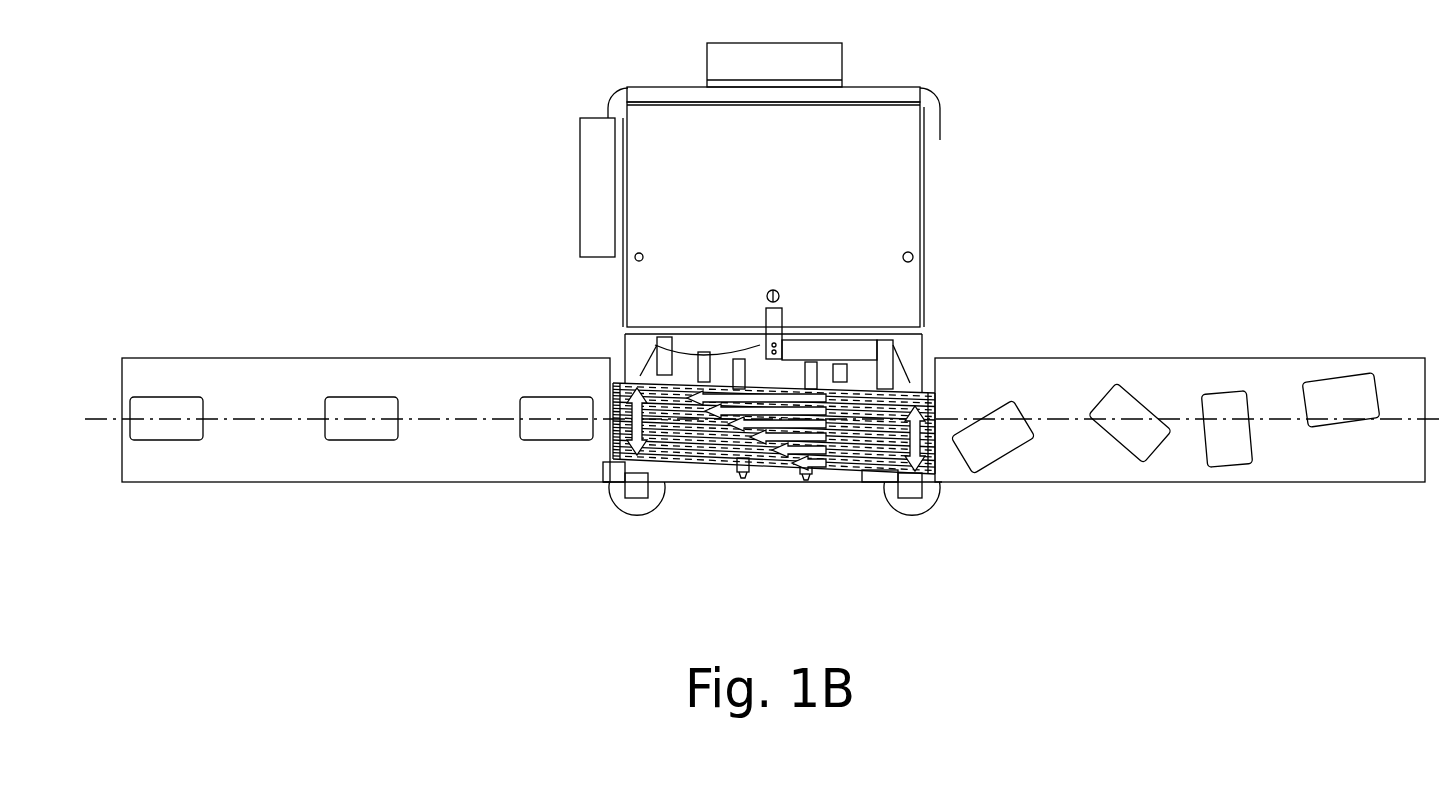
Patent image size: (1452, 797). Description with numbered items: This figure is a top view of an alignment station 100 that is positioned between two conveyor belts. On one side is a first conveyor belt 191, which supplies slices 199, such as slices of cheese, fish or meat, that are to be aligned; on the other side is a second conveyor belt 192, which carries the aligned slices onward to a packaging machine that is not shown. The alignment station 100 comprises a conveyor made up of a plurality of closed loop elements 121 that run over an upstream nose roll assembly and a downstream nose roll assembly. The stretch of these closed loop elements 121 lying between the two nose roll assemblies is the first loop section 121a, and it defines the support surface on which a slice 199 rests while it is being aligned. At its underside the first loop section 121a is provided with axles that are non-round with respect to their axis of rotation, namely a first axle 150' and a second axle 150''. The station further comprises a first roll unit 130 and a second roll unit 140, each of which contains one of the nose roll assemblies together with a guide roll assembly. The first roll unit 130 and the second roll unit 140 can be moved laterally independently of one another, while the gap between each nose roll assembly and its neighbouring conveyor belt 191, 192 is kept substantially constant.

The alignment station 100 is at (998, 215).
The first conveyor belt 191 is at (1080, 365).
The second conveyor belt 192 is at (258, 373).
The slice 199 is at (1123, 405).
The first axle 150' is at (941, 322).
The second axle 150'' is at (598, 310).
The closed loop elements 121 is at (855, 388).
The first loop section 121a is at (716, 463).
The first roll unit 130 is at (891, 472).
The second roll unit 140 is at (611, 467).